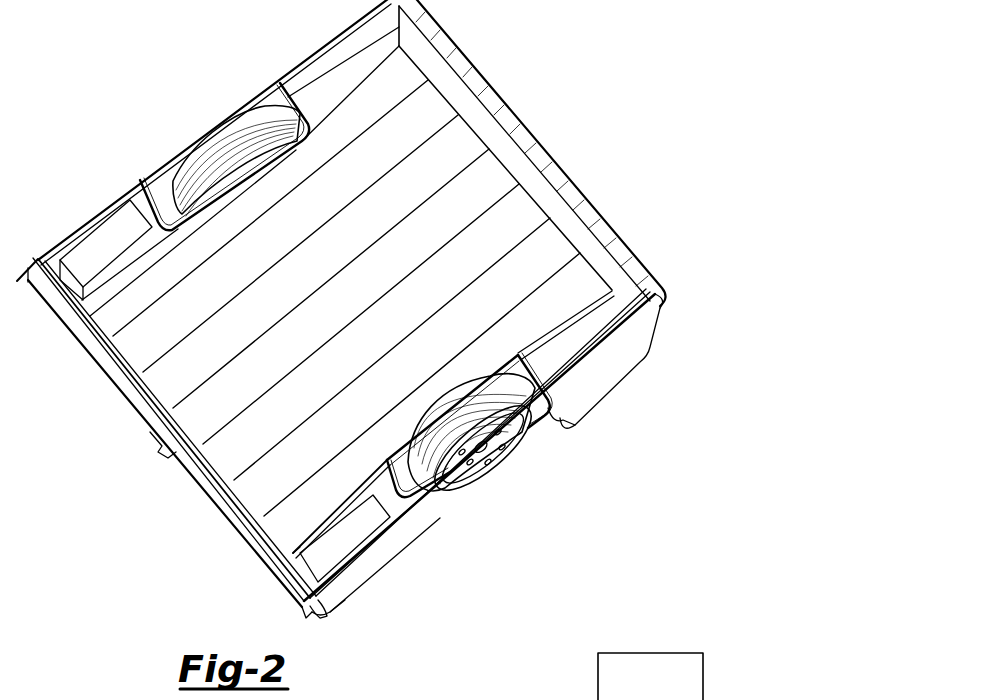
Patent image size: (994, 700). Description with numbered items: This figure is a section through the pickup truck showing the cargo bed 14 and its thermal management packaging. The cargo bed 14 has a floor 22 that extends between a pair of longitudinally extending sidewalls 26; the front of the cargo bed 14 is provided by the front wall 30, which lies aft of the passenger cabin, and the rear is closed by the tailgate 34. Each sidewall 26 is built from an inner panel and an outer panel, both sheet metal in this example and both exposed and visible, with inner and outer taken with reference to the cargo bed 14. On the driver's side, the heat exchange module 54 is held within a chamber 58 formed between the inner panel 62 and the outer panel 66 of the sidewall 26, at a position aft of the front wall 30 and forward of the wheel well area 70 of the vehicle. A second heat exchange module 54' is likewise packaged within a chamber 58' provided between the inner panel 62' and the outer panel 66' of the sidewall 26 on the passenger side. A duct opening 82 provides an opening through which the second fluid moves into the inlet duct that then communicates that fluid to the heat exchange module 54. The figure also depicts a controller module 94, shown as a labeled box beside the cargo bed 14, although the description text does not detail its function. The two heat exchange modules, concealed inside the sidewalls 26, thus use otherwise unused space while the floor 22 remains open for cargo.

The cargo bed 14 is at (460, 161).
The floor 22 is at (531, 220).
The sidewall 26 is at (304, 147).
The front wall 30 is at (188, 432).
The tailgate 34 is at (596, 250).
The heat exchange module 54 is at (368, 543).
The second heat exchange module 54' is at (106, 230).
The chamber 58 is at (469, 425).
The chamber 58' is at (224, 156).
The inner panel 62 is at (309, 505).
The inner panel 62' is at (193, 236).
The outer panel 66 is at (372, 615).
The outer panel 66' is at (37, 230).
The wheel well area 70 is at (463, 403).
The duct opening 82 is at (328, 618).
The controller module 94 is at (703, 687).